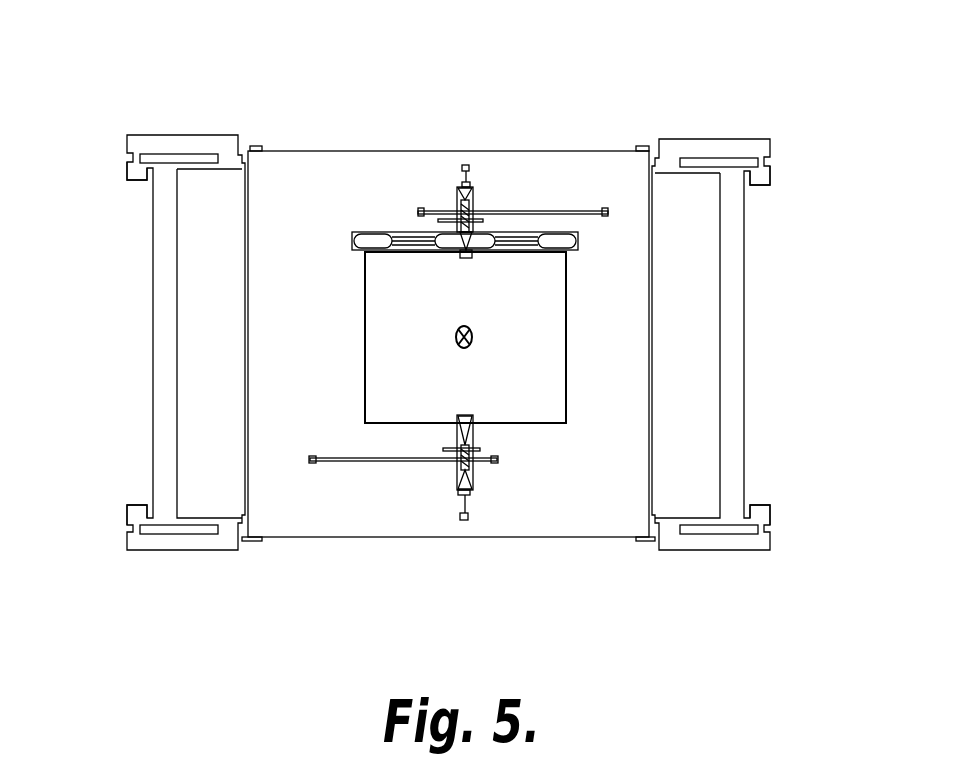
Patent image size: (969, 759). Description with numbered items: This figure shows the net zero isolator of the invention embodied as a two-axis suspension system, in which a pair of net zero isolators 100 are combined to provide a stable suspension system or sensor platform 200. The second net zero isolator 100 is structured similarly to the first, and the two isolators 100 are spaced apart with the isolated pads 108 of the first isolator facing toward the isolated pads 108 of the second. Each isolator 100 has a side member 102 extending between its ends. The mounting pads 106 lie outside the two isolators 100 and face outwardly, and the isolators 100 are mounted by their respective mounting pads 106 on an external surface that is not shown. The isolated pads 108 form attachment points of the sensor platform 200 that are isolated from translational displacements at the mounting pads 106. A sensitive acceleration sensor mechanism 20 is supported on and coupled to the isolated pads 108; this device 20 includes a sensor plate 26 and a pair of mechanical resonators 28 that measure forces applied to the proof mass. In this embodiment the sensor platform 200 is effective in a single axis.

The sensor platform 200 is at (796, 92).
The net zero isolator 100 is at (118, 376).
The frame side member 102 is at (153, 315).
The mounting pad 106 is at (130, 185).
The isolated pad 108 is at (257, 146).
The acceleration sensor mechanism 20 is at (239, 393).
The sensor plate 26 is at (516, 150).
The mechanical resonator 28 is at (441, 200).